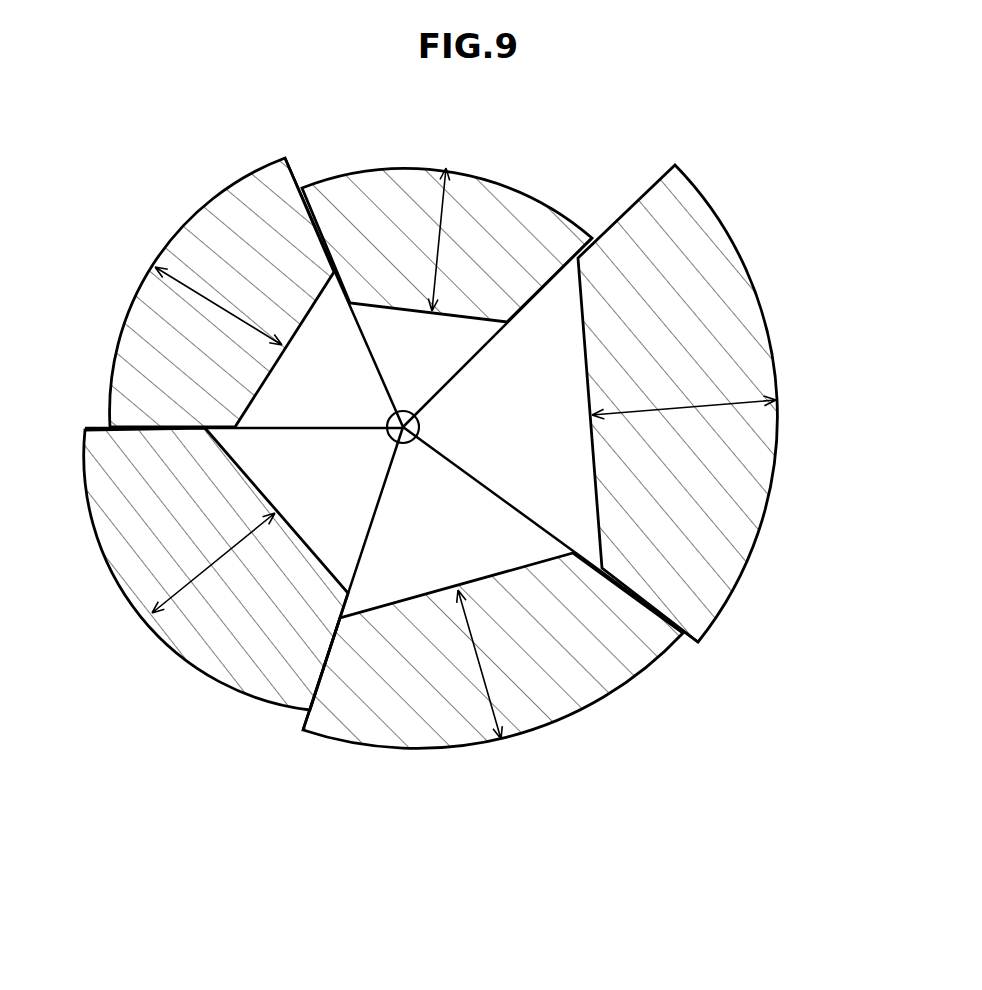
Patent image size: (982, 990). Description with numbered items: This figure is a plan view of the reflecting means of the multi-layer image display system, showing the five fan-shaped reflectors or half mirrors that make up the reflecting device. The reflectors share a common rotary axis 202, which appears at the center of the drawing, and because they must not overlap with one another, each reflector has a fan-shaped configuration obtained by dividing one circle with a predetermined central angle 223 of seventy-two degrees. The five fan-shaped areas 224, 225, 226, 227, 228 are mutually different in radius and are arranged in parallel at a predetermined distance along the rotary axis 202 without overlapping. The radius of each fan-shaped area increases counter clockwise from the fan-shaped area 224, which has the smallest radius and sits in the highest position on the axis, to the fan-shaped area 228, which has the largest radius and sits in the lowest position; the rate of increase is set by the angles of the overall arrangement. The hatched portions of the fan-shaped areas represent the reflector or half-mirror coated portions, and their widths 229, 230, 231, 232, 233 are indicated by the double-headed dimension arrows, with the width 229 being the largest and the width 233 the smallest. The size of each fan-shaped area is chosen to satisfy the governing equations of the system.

The rotary axis 202 is at (420, 430).
The central angle 223 is at (412, 445).
The fan-shaped area 224 is at (447, 298).
The fan-shaped area 225 is at (256, 292).
The fan-shaped area 226 is at (243, 569).
The fan-shaped area 227 is at (493, 587).
The fan-shaped area 228 is at (590, 403).
The width 229 is at (446, 168).
The width 230 is at (155, 267).
The width 231 is at (152, 613).
The width 232 is at (501, 739).
The width 233 is at (776, 400).